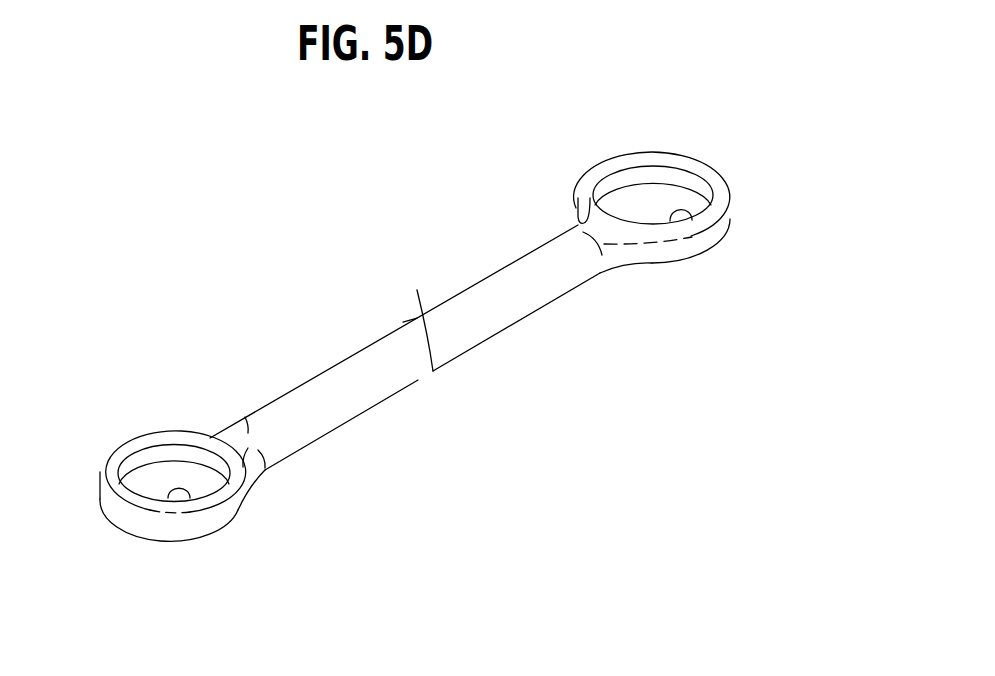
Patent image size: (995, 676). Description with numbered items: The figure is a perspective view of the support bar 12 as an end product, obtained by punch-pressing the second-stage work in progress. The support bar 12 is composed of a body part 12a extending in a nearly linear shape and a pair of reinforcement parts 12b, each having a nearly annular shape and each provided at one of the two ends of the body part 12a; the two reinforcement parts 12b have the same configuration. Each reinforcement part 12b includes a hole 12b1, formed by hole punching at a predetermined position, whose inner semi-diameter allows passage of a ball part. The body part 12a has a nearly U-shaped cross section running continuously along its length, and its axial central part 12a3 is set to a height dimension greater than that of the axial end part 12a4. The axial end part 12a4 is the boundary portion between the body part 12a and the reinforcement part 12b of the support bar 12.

The support bar 12 is at (508, 163).
The body part 12a is at (513, 277).
The axial central part 12a3 is at (417, 292).
The axial end part 12a4 is at (245, 417).
The reinforcement part 12b is at (693, 162).
The hole 12b1 is at (692, 220).